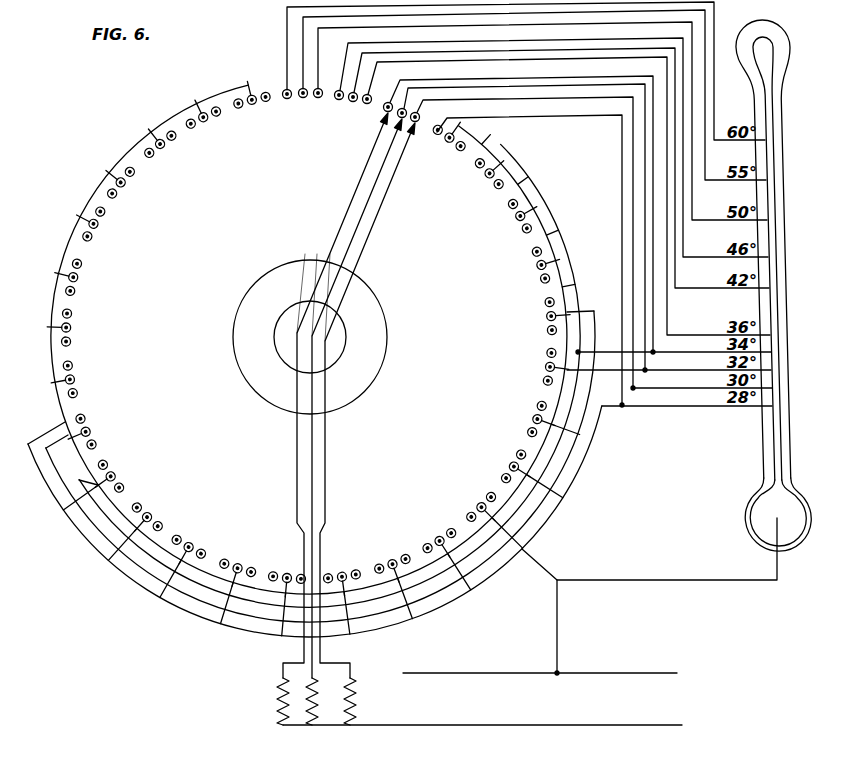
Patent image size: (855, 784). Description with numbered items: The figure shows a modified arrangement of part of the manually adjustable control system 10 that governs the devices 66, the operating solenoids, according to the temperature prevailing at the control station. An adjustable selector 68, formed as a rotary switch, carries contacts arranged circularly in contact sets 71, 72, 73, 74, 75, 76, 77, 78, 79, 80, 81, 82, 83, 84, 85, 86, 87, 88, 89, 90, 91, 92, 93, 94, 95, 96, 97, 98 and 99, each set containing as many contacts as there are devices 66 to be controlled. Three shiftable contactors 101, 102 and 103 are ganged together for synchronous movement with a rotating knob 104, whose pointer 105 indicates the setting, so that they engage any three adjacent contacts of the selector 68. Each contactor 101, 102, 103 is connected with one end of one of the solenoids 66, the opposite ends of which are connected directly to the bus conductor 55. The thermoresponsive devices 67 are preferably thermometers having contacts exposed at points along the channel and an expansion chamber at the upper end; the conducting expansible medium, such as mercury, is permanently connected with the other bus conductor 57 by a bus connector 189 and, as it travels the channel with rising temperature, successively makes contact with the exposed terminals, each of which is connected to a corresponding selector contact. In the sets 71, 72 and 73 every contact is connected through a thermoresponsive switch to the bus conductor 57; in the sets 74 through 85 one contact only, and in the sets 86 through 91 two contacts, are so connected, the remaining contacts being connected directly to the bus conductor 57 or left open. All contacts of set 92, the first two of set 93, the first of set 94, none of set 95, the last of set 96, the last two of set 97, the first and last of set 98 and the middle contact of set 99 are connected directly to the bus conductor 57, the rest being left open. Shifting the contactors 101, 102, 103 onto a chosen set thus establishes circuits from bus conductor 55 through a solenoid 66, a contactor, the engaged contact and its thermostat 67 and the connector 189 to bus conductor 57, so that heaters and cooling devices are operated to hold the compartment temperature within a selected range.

The control system 10 is at (124, 149).
The bus conductor 55 is at (482, 714).
The bus conductor 57 is at (542, 627).
The devices 66 is at (270, 703).
The thermoresponsive devices 67 is at (765, 44).
The adjustable selector 68 is at (323, 361).
The contact set 71 is at (525, 111).
The contact set 72 is at (553, 186).
The contact set 73 is at (382, 122).
The contact set 74 is at (599, 259).
The contact set 75 is at (491, 170).
The contact set 76 is at (520, 213).
The contact set 77 is at (539, 263).
The contact set 78 is at (548, 315).
The contact set 79 is at (546, 368).
The contact set 80 is at (535, 421).
The contact set 81 is at (516, 470).
The contact set 82 is at (483, 512).
The contact set 83 is at (443, 544).
The contact set 84 is at (394, 564).
The contact set 85 is at (343, 577).
The contact set 86 is at (286, 578).
The contact set 87 is at (235, 568).
The contact set 88 is at (187, 547).
The contact set 89 is at (146, 518).
The contact set 90 is at (111, 480).
The contact set 91 is at (88, 434).
The contact set 92 is at (74, 380).
The contact set 93 is at (70, 327).
The contact set 94 is at (75, 276).
The contact set 95 is at (93, 221).
The contact set 96 is at (120, 179).
The contact set 97 is at (156, 142).
The contact set 98 is at (200, 114).
The contact set 99 is at (250, 99).
The contactor 101 is at (359, 183).
The contactor 102 is at (368, 201).
The contactor 103 is at (377, 219).
The rotating knob 104 is at (275, 273).
The pointer 105 is at (355, 273).
The bus connector 189 is at (545, 572).